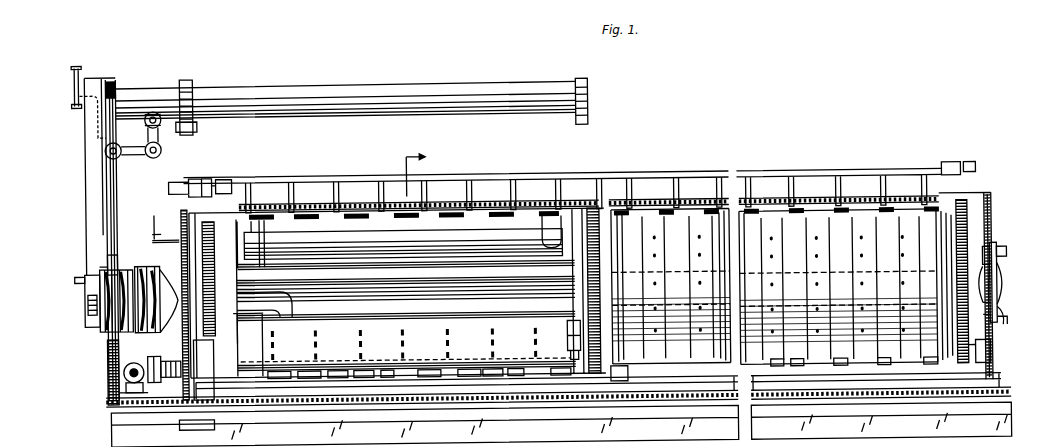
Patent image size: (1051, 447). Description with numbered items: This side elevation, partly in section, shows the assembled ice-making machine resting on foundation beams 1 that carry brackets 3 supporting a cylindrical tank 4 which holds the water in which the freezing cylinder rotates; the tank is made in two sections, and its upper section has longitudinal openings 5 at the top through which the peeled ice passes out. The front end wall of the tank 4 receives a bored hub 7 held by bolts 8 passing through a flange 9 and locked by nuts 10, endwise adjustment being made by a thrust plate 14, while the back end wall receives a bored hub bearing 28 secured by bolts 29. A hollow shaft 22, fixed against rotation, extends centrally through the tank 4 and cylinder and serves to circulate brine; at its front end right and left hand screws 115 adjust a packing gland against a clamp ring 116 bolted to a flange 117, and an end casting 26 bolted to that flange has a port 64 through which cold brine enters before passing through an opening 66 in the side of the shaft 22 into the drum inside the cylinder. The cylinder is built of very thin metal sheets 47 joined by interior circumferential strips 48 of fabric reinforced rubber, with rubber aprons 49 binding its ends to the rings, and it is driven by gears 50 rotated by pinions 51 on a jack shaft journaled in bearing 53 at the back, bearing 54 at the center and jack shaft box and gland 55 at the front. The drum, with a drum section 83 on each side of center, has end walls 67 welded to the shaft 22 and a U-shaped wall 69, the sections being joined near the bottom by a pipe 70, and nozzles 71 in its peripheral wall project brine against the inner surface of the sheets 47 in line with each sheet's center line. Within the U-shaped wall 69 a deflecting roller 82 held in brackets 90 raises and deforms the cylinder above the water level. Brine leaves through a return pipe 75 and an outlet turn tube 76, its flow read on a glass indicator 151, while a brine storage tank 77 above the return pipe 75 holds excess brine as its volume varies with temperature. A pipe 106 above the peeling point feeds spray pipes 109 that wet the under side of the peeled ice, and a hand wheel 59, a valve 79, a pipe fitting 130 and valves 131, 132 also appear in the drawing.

The foundation beams 1 is at (424, 426).
The brackets 3 is at (240, 410).
The cylindrical tank 4 is at (993, 228).
The longitudinal openings 5 is at (421, 173).
The bored hub 7 is at (142, 262).
The bolts 8 is at (153, 261).
The flange 9 is at (160, 234).
The nuts 10 is at (160, 264).
The thrust plate 14 is at (192, 303).
The hollow shaft 22 is at (378, 278).
The end casting 26 is at (100, 270).
The bored hub bearing 28 is at (1000, 262).
The bolts 29 is at (1005, 333).
The sheets 47 is at (310, 375).
The circumferential strips 48 is at (418, 377).
The aprons 49 is at (233, 210).
The gear 50 is at (600, 200).
The pinions 51 is at (1013, 392).
The bearing 53 is at (992, 369).
The bearing 54 is at (629, 374).
The jack shaft box and gland 55 is at (172, 374).
The hand wheel 59 is at (134, 390).
The port 64 is at (85, 300).
The opening 66 is at (292, 315).
The end walls 67 is at (567, 322).
The U-shaped wall 69 is at (342, 262).
The pipe 70 is at (567, 338).
The nozzle 71 is at (402, 330).
The return pipe 75 is at (87, 190).
The outlet turn tube 76 is at (80, 92).
The brine storage tank 77 is at (298, 92).
The valve 79 is at (164, 146).
The deflecting roller 82 is at (403, 239).
The drum section 83 is at (333, 368).
The brackets 90 is at (244, 236).
The pipe 106 is at (820, 171).
The spray pipe 109 is at (292, 200).
The right and left hand screws 115 is at (116, 262).
The clamp ring 116 is at (312, 175).
The flange 117 is at (110, 262).
The pipe fitting 130 is at (151, 152).
The valve 131 is at (156, 108).
The valve 132 is at (107, 146).
The glass indicator 151 is at (77, 72).